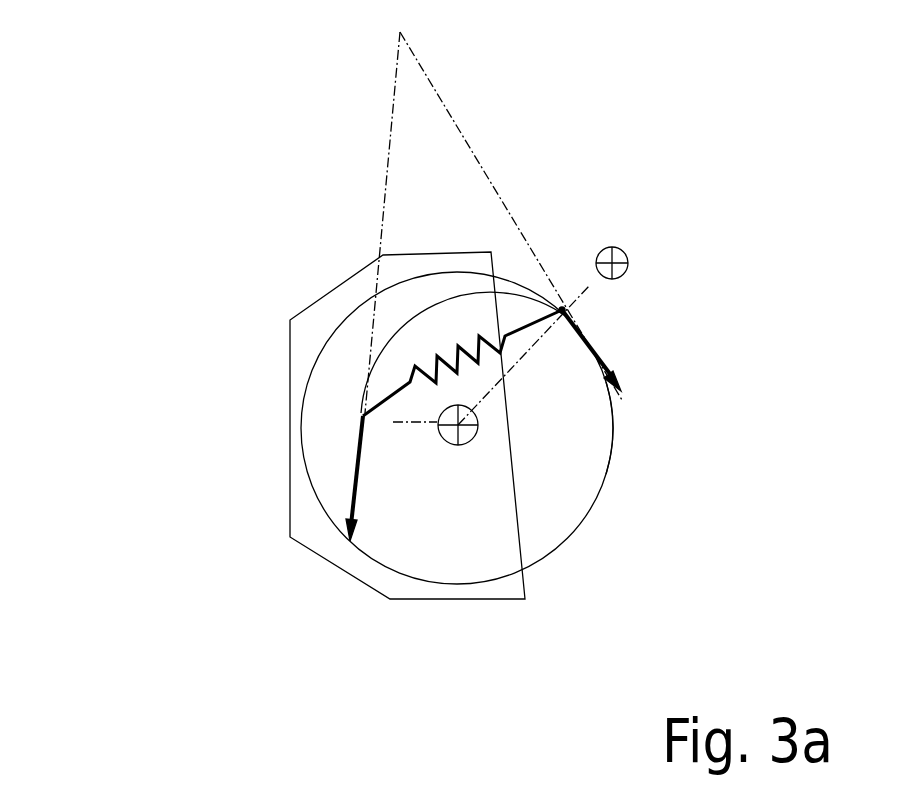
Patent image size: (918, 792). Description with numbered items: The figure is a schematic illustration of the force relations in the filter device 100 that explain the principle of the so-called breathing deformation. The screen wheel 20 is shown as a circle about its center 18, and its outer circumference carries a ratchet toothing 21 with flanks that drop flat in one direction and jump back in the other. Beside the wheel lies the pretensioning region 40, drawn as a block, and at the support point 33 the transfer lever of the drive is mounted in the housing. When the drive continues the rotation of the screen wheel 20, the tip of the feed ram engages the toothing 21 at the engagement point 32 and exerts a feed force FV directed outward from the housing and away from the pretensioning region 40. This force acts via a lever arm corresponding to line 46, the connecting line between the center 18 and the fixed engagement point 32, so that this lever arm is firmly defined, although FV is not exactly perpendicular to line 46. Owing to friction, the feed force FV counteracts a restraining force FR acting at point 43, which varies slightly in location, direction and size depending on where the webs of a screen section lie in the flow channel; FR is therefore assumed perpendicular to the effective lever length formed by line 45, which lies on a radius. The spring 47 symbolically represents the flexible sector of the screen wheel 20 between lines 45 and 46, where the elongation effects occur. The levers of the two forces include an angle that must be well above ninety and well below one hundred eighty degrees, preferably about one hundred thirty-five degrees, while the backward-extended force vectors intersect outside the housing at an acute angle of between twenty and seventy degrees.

The drive arrangement 100 is at (735, 113).
The pretensioning region 40 is at (290, 320).
The screen wheel 20 is at (580, 483).
The ratchet toothing 21 is at (613, 428).
The center 18 is at (460, 445).
The line 45 is at (406, 423).
The line 46 is at (533, 342).
The spring 47 is at (476, 347).
The point 43 is at (357, 415).
The engagement point 32 is at (562, 310).
The support point 33 is at (630, 262).
The restraining force FR is at (357, 450).
The feed force FV is at (597, 352).